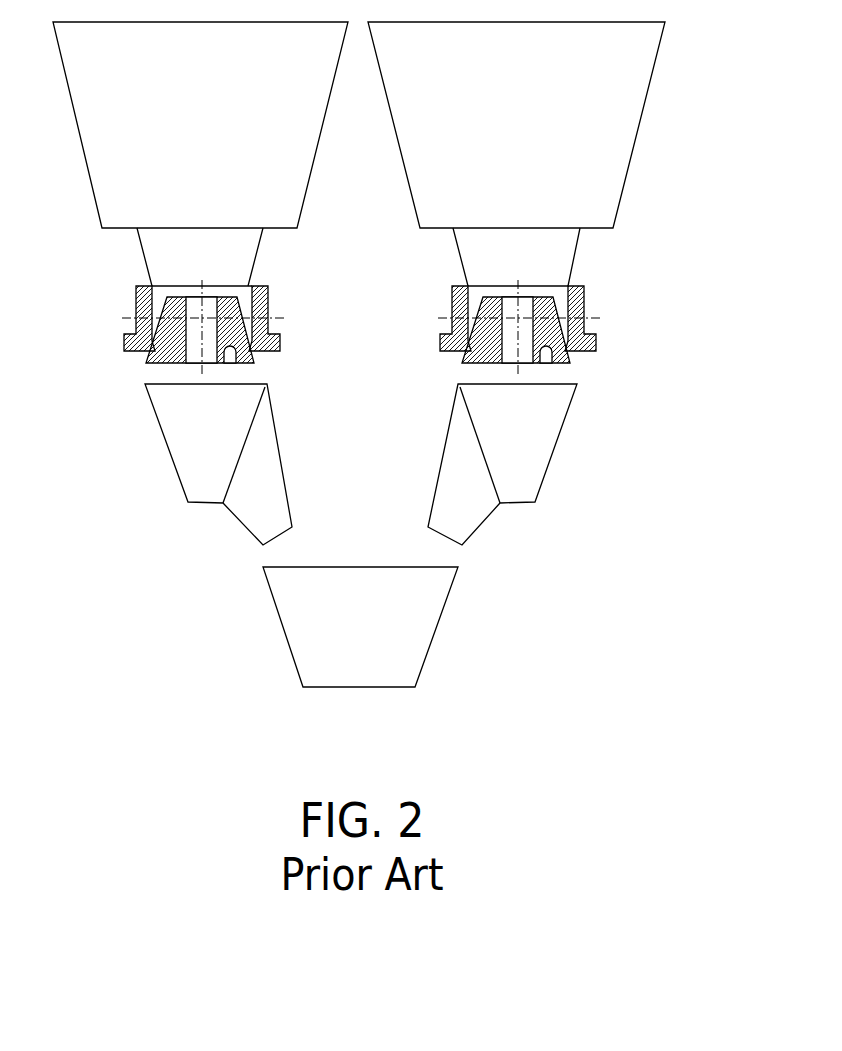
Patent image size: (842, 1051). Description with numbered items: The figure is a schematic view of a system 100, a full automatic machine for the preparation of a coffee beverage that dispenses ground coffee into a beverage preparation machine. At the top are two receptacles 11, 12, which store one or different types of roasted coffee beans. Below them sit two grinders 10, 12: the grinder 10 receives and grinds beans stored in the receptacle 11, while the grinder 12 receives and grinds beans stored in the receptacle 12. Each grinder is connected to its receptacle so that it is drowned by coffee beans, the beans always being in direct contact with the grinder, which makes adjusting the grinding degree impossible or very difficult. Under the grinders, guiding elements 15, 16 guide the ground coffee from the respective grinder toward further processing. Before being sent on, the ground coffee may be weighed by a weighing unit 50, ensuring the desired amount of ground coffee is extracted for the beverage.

The grinder 10 is at (137, 315).
The receptacle 11 is at (93, 118).
The receptacle and grinder 12 is at (628, 123).
The guiding element 15 is at (182, 448).
The guiding element 16 is at (537, 444).
The weighing unit 50 is at (433, 625).
The system 100 is at (686, 392).